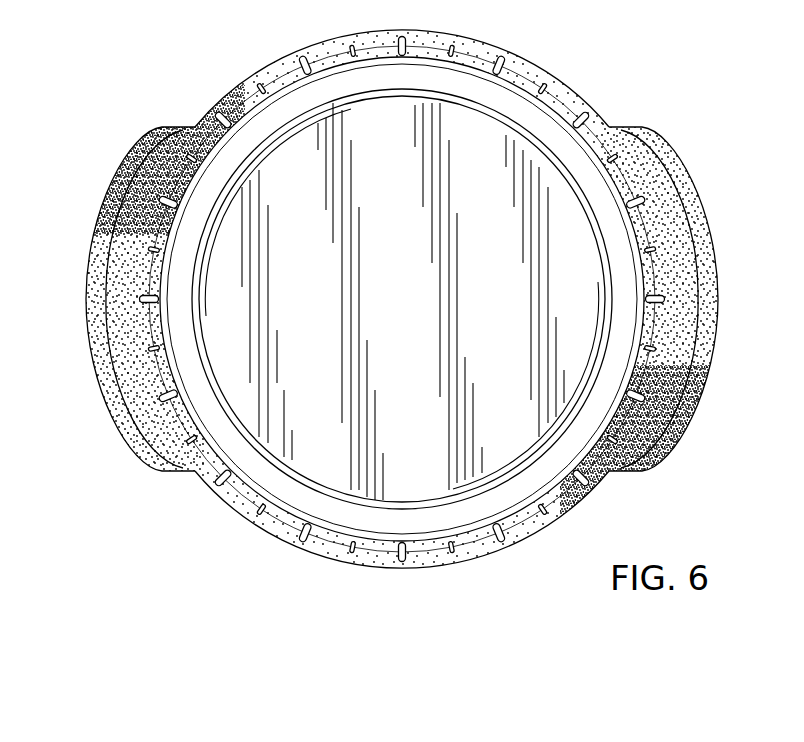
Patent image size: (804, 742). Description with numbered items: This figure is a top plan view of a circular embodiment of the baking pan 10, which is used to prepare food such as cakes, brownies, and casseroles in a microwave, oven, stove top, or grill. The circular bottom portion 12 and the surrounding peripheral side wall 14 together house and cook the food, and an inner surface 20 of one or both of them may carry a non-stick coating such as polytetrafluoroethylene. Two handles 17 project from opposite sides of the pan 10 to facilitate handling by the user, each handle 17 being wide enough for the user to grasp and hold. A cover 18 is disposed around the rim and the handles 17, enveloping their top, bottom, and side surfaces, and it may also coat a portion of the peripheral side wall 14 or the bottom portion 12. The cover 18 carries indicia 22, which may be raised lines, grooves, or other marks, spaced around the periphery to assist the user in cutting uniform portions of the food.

The baking pan 10 is at (84, 88).
The bottom portion 12 is at (228, 247).
The peripheral side wall 14 is at (280, 104).
The handle 17 is at (84, 316).
The cover 18 is at (470, 570).
The inner surface 20 is at (316, 453).
The indicia 22 is at (501, 50).